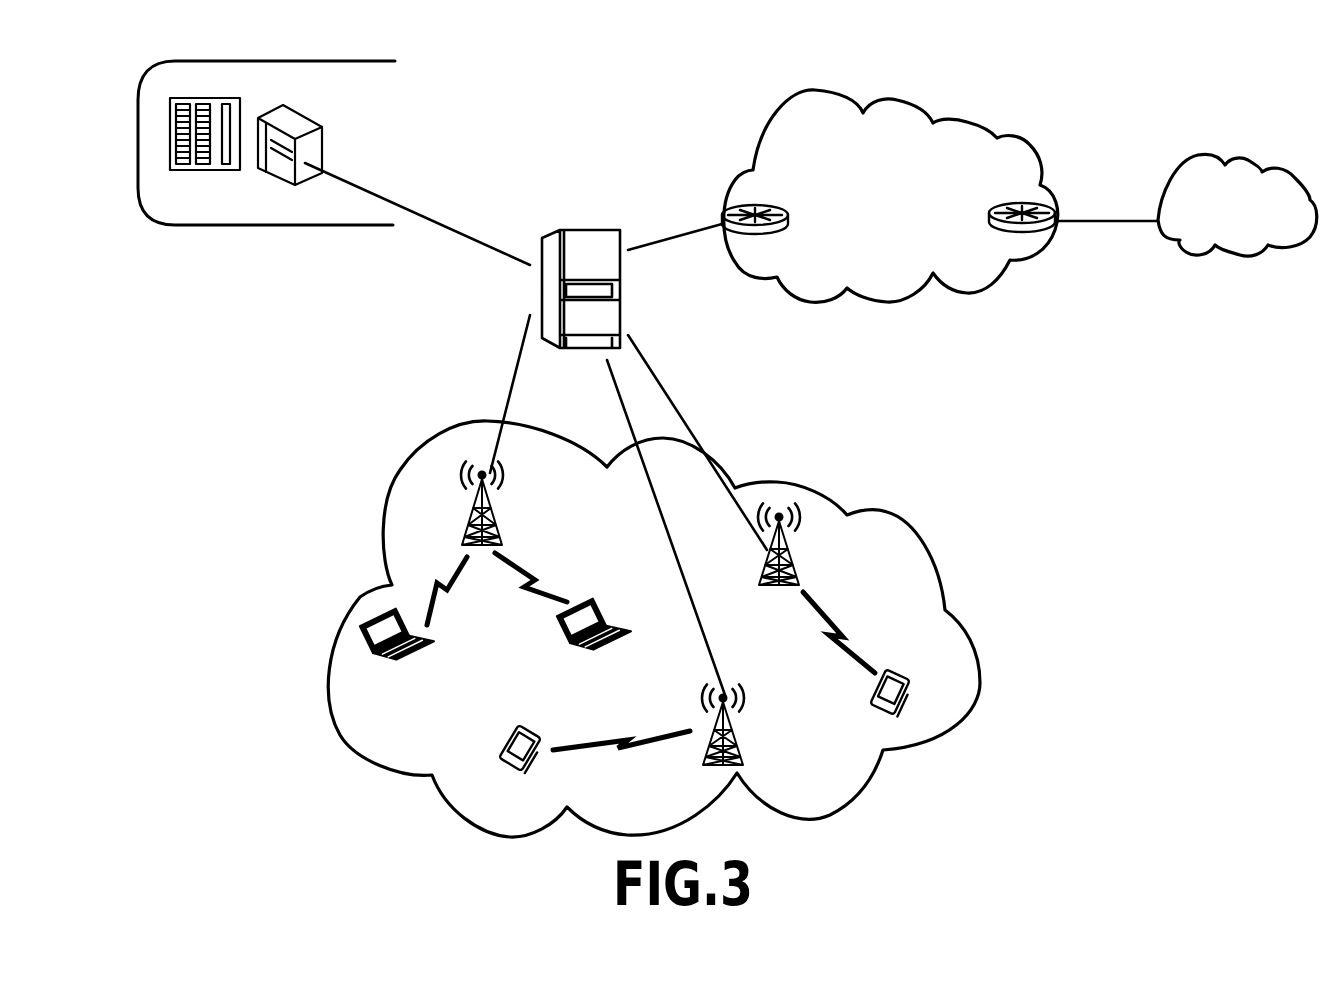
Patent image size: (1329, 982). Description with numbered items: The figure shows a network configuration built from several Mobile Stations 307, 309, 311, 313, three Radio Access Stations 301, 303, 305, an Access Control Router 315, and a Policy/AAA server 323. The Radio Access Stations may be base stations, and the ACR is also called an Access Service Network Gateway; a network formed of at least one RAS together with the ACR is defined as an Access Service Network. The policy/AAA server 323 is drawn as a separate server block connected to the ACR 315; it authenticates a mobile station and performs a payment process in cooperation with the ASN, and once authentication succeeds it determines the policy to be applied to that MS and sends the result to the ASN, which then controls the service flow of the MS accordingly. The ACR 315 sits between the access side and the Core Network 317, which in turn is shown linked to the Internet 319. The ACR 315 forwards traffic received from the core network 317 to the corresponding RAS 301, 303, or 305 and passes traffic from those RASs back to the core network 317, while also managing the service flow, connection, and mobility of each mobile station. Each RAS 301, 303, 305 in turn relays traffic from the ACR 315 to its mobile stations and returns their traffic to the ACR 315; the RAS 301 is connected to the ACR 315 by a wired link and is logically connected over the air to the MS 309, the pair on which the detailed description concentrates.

The radio access station 301 is at (472, 517).
The radio access station 303 is at (800, 515).
The radio access station 305 is at (737, 770).
The mobile station 307 is at (507, 768).
The mobile station 309 is at (388, 663).
The mobile station 311 is at (550, 658).
The mobile station 313 is at (913, 687).
The access control router 315 is at (625, 289).
The core network 317 is at (890, 196).
The internet 319 is at (1237, 205).
The policy/AAA server 323 is at (310, 122).